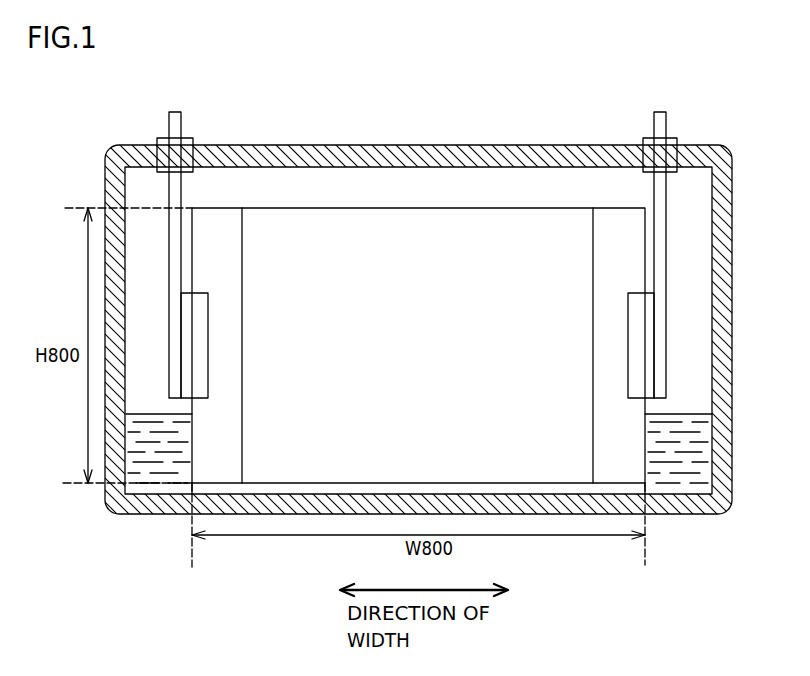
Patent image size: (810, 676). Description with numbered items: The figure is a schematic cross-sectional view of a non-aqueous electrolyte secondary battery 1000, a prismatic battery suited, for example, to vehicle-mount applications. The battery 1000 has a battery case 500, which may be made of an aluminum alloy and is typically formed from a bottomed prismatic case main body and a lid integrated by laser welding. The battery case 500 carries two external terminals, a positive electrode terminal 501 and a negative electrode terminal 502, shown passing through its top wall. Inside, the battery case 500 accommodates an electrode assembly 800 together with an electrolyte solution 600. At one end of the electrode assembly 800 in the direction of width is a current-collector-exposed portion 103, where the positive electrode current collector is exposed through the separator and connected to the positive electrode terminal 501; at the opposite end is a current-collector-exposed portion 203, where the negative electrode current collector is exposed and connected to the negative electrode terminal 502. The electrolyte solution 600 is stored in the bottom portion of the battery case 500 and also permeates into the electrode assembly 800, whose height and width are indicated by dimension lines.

The battery 1000 is at (770, 47).
The battery case 500 is at (475, 153).
The positive electrode terminal 501 is at (173, 112).
The negative electrode terminal 502 is at (657, 111).
The electrode assembly 800 is at (373, 297).
The electrolyte solution 600 is at (685, 428).
The current-collector-exposed portion 103 is at (212, 447).
The current-collector-exposed portion 203 is at (626, 447).